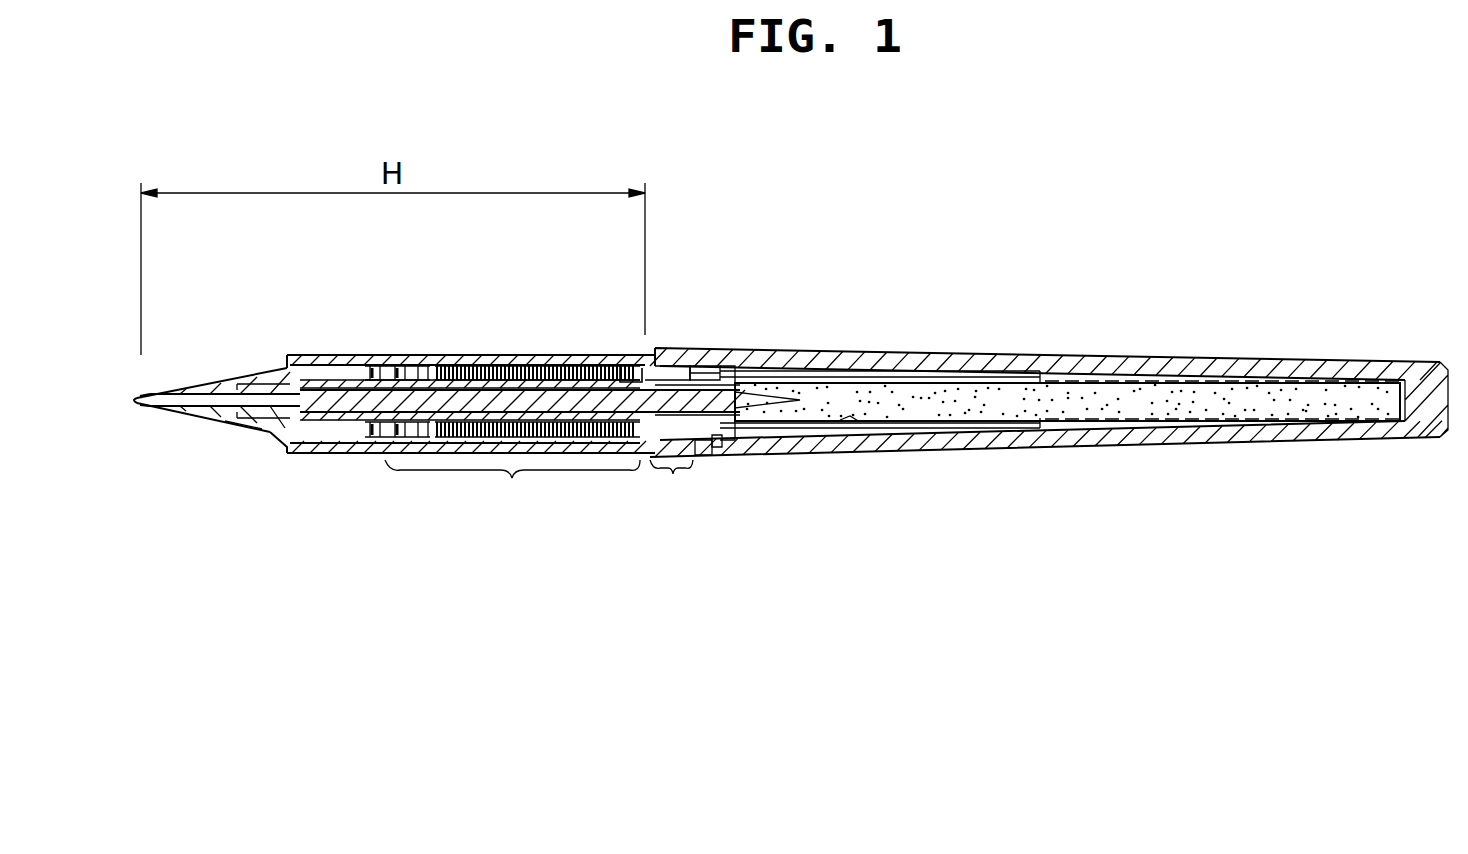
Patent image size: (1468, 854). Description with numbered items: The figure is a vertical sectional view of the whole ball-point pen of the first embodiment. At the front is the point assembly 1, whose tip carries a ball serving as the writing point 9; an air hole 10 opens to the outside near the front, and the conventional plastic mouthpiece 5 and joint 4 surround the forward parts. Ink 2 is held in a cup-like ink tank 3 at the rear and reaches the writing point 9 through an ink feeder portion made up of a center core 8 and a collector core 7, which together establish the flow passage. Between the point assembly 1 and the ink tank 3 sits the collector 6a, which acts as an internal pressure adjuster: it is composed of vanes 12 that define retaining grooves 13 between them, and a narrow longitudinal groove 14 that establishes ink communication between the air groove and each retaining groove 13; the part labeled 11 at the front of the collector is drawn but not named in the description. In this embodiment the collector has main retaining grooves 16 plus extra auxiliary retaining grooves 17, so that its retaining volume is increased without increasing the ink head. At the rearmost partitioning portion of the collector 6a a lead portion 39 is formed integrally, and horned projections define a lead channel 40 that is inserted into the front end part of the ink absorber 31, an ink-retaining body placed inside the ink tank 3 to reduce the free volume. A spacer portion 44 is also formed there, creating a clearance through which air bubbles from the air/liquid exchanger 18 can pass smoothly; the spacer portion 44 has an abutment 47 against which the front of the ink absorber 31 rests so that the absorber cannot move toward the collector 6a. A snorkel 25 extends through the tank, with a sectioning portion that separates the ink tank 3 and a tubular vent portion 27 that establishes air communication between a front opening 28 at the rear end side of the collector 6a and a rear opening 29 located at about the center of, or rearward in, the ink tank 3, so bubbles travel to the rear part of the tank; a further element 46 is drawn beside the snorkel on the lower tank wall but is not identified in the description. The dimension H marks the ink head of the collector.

The point assembly 1 is at (186, 387).
The ink 2 is at (790, 437).
The ink tank 3 is at (832, 356).
The joint 4 is at (255, 372).
The mouthpiece 5 is at (220, 386).
The collector 6a is at (342, 380).
The collector core 7 is at (485, 400).
The center core 8 is at (338, 414).
The writing point 9 is at (138, 397).
The air hole 10 is at (240, 432).
The spacer element 11 is at (375, 366).
The vanes 12 is at (446, 366).
The retaining grooves 13 is at (415, 367).
The narrow longitudinal groove 14 is at (525, 366).
The main retaining grooves 16 is at (512, 490).
The auxiliary retaining grooves 17 is at (671, 487).
The air/liquid exchanger 18 is at (632, 366).
The snorkel 25 is at (895, 432).
The vent portion 27 is at (870, 385).
The front opening 28 is at (735, 388).
The rear opening 29 is at (1040, 385).
The ink absorber 31 is at (1110, 400).
The lead portion 39 is at (742, 398).
The lead channel 40 is at (700, 366).
The spacer portion 44 is at (716, 446).
The projection 46 is at (850, 424).
The abutment 47 is at (702, 456).